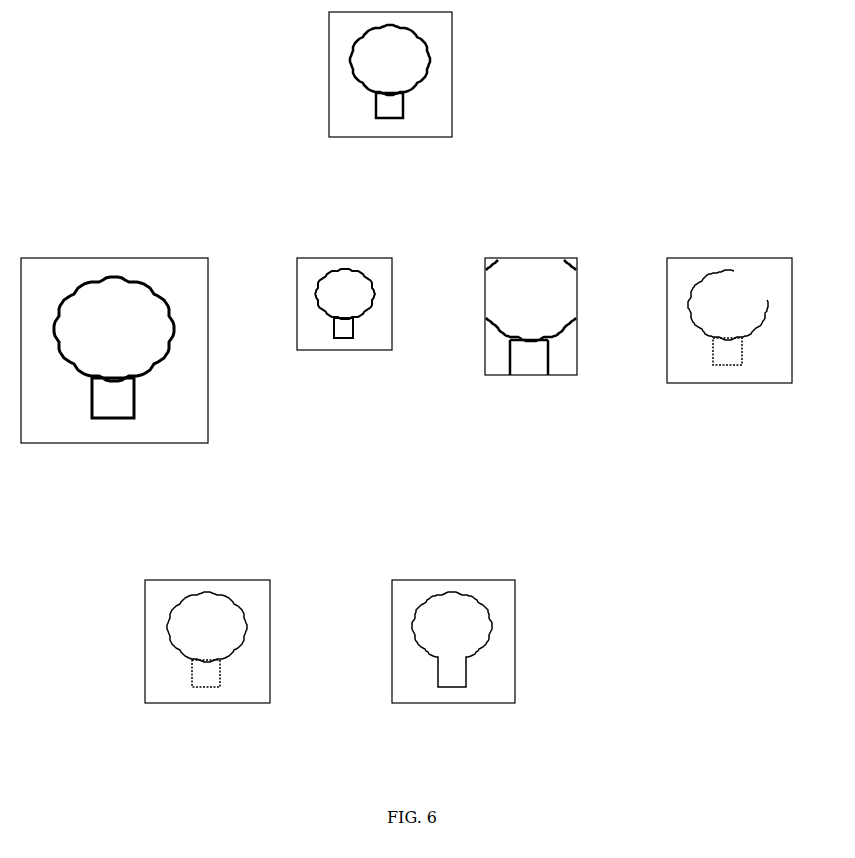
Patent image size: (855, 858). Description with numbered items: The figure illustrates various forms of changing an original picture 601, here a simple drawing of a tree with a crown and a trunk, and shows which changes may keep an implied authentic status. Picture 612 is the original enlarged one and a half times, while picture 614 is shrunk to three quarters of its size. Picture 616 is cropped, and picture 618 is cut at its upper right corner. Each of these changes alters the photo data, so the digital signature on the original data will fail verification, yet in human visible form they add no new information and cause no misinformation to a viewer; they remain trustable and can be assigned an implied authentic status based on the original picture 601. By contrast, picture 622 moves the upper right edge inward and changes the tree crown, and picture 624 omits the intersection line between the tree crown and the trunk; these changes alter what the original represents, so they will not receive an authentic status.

The picture 601 is at (390, 108).
The picture 612 is at (114, 385).
The picture 614 is at (344, 338).
The picture 616 is at (531, 353).
The picture 618 is at (729, 353).
The picture 622 is at (207, 675).
The picture 624 is at (453, 675).